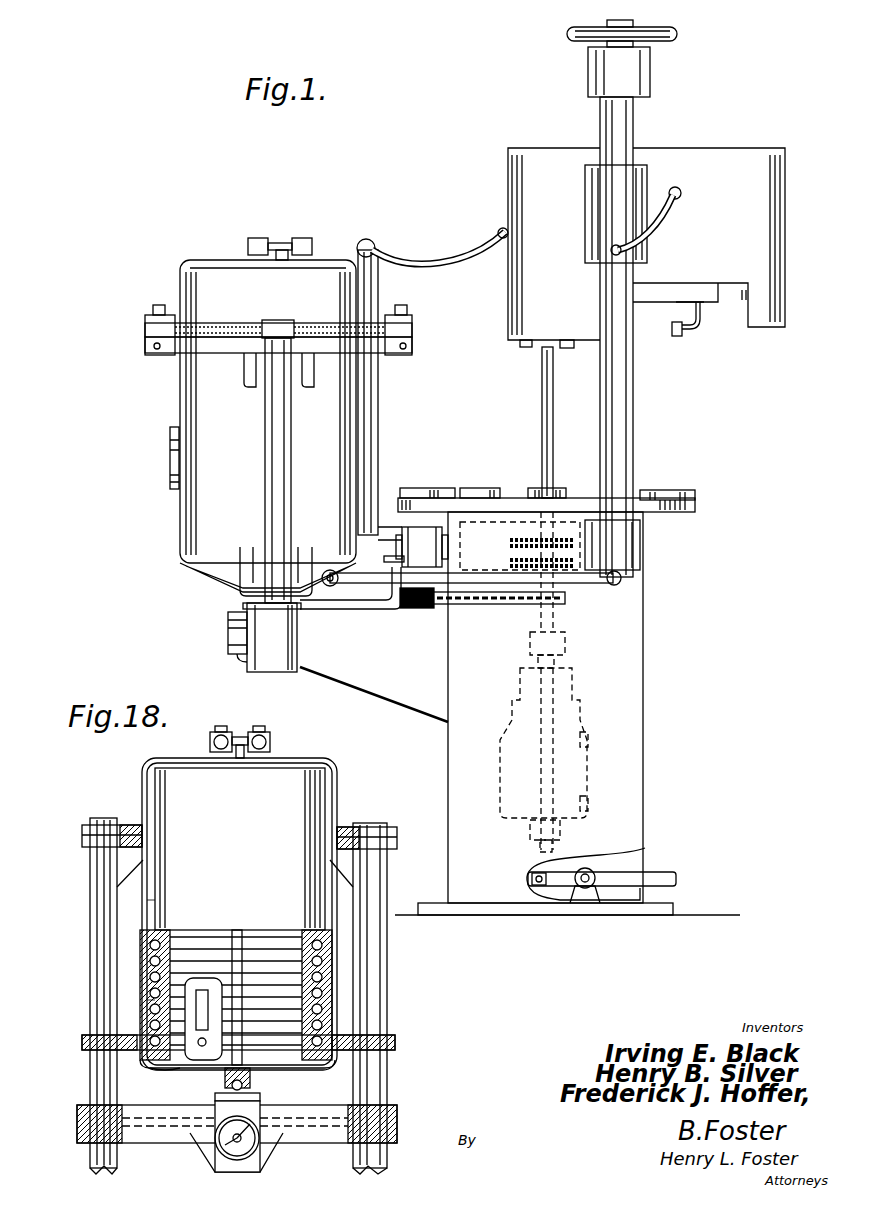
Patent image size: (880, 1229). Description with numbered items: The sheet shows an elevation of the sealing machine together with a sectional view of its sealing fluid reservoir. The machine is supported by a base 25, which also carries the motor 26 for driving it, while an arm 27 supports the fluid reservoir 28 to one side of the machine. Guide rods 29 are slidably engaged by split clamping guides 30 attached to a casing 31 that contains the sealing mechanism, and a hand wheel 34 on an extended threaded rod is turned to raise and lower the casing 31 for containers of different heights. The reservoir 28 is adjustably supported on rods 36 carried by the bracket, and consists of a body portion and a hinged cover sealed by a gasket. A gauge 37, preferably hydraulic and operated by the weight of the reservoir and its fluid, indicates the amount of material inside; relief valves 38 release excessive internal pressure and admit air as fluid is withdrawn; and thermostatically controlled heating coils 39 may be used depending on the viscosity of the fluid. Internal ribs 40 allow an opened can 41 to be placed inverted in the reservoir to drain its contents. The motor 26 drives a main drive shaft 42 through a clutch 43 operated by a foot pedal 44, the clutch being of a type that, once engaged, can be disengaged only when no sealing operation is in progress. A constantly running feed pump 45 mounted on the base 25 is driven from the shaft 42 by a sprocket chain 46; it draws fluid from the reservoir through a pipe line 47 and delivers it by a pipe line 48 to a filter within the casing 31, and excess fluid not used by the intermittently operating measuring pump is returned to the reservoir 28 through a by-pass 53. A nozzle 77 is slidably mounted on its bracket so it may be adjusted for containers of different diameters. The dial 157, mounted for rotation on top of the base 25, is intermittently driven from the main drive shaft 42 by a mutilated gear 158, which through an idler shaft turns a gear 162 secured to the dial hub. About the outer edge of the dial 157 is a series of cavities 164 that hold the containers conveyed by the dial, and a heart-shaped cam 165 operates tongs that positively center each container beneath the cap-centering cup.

In FIG. 1, the base 25 is at (643, 760).
In FIG. 1, the motor 26 is at (580, 772).
In FIG. 1, the arm 27 is at (390, 695).
In FIG. 1, the fluid reservoir 28 is at (180, 410).
In FIG. 18, the fluid reservoir 28 is at (337, 925).
In FIG. 1, the guide rods 29 is at (633, 430).
In FIG. 1, the split clamping guides 30 is at (585, 212).
In FIG. 1, the casing 31 is at (720, 165).
In FIG. 1, the hand wheel 34 is at (670, 40).
In FIG. 1, the rods 36 is at (265, 416).
In FIG. 18, the rods 36 is at (90, 966).
In FIG. 1, the gauge 37 is at (228, 638).
In FIG. 18, the gauge 37 is at (215, 1138).
In FIG. 1, the relief valves 38 is at (300, 236).
In FIG. 18, the relief valves 38 is at (266, 731).
In FIG. 1, the heating coils 39 is at (170, 473).
In FIG. 18, the heating coils 39 is at (162, 1068).
In FIG. 18, the internal ribs 40 is at (237, 938).
In FIG. 18, the can 41 is at (240, 849).
In FIG. 1, the main drive shaft 42 is at (542, 436).
In FIG. 1, the clutch 43 is at (568, 648).
In FIG. 1, the foot pedal 44 is at (668, 872).
In FIG. 1, the feed pump 45 is at (422, 547).
In FIG. 1, the sprocket chain 46 is at (445, 606).
In FIG. 1, the pipe line 47 is at (360, 604).
In FIG. 1, the pipe line 48 is at (378, 415).
In FIG. 1, the by-pass 53 is at (485, 585).
In FIG. 1, the nozzle 77 is at (704, 330).
In FIG. 1, the dial 157 is at (695, 512).
In FIG. 1, the mutilated gear 158 is at (568, 570).
In FIG. 1, the gear 162 is at (510, 543).
In FIG. 1, the cavities 164 is at (470, 488).
In FIG. 1, the heart-shaped cam 165 is at (567, 348).